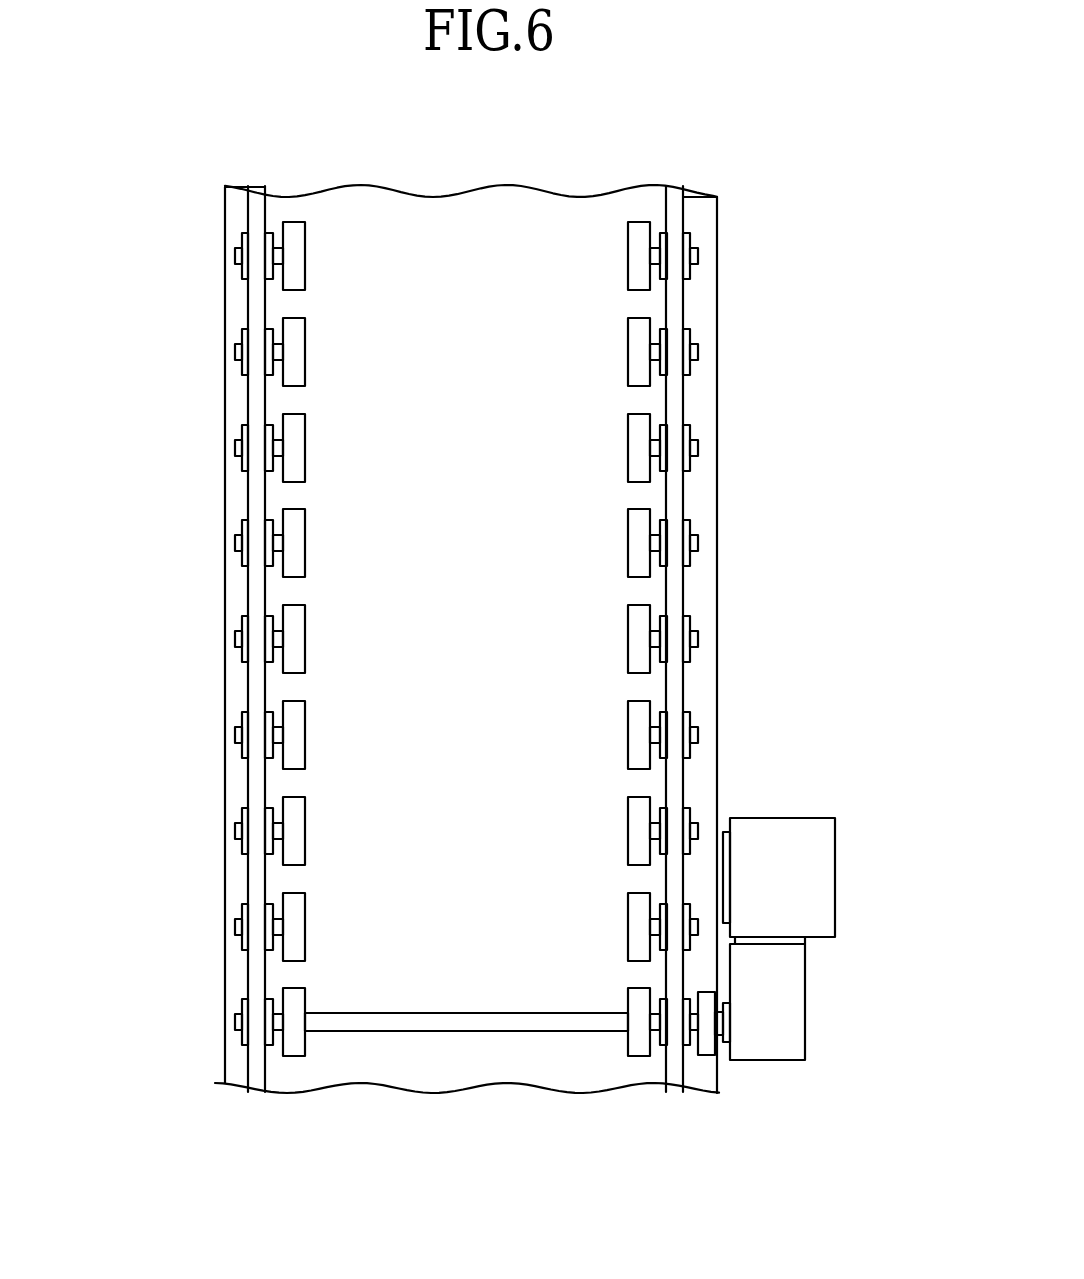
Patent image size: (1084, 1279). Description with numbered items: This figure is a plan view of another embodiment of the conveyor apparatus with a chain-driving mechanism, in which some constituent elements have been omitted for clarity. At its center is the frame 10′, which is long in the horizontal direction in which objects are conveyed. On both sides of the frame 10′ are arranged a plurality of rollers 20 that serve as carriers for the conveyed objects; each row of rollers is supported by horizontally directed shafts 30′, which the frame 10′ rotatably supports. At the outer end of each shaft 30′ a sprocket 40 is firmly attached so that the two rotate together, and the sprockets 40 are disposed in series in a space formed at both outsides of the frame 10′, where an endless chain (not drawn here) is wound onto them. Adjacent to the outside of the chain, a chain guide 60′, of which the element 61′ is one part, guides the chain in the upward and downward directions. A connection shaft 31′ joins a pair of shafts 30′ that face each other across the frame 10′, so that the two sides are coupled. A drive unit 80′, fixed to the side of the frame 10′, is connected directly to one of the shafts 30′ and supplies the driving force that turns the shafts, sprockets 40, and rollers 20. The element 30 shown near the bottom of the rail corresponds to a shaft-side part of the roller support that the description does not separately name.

The frame 10′ is at (722, 480).
The rollers 20 is at (466, 639).
The roller shaft bearing 30 is at (272, 1040).
The shafts 30′ is at (472, 689).
The connection shaft 31′ is at (463, 1013).
The sprockets 40 is at (470, 685).
The chain guide 60′ is at (820, 371).
The chain guide element 61′ is at (462, 639).
The drive motor unit 80′ is at (808, 1000).